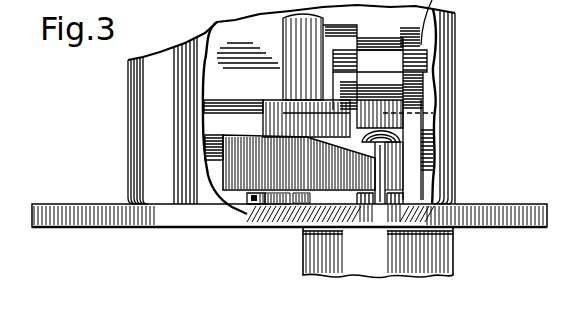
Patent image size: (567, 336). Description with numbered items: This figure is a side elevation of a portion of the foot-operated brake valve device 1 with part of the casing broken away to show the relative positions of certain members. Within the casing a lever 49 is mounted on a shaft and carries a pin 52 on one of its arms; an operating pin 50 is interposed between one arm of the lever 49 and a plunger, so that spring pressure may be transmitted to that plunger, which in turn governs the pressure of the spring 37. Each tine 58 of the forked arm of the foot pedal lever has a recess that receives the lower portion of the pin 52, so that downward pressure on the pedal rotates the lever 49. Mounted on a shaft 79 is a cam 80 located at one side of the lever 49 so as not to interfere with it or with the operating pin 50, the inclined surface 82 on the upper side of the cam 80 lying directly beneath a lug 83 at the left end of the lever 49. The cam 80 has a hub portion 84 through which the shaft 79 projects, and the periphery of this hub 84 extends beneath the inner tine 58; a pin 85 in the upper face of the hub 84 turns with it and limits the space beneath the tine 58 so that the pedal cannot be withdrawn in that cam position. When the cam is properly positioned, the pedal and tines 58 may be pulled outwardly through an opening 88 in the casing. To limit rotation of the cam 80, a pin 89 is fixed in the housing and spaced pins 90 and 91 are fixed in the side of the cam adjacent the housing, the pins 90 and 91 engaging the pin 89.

The foot-operated brake valve device 1 is at (142, 72).
The spring 37 is at (190, 0).
The lever 49 is at (375, 63).
The operating pin 50 is at (390, 191).
The pin 52 is at (338, 50).
The tine 58 is at (338, 81).
The shaft 79 is at (297, 32).
The cam 80 is at (227, 172).
The inclined surface 82 is at (323, 143).
The lug 83 is at (425, 117).
The hub portion 84 is at (262, 113).
The pin 85 is at (320, 100).
The opening 88 is at (237, 132).
The pin 89 is at (260, 198).
The pin 90 is at (308, 200).
The pin 91 is at (275, 197).